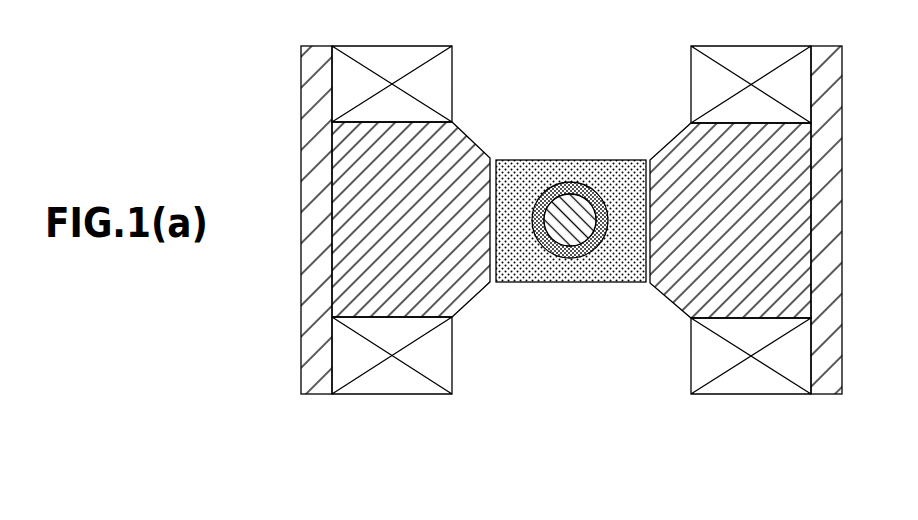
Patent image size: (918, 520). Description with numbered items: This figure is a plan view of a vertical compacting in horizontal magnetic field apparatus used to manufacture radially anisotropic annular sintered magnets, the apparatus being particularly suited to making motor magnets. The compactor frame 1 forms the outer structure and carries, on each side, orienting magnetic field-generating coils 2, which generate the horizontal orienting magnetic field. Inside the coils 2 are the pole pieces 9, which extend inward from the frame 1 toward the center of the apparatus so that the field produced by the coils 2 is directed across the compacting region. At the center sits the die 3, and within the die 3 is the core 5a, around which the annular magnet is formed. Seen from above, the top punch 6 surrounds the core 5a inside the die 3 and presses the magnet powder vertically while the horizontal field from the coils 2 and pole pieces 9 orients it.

The compactor frame 1 is at (835, 168).
The orienting magnetic field-generating coils 2 is at (348, 80).
The die 3 is at (525, 170).
The core 5a is at (570, 208).
The top punch 6 is at (570, 258).
The pole pieces 9 is at (348, 157).